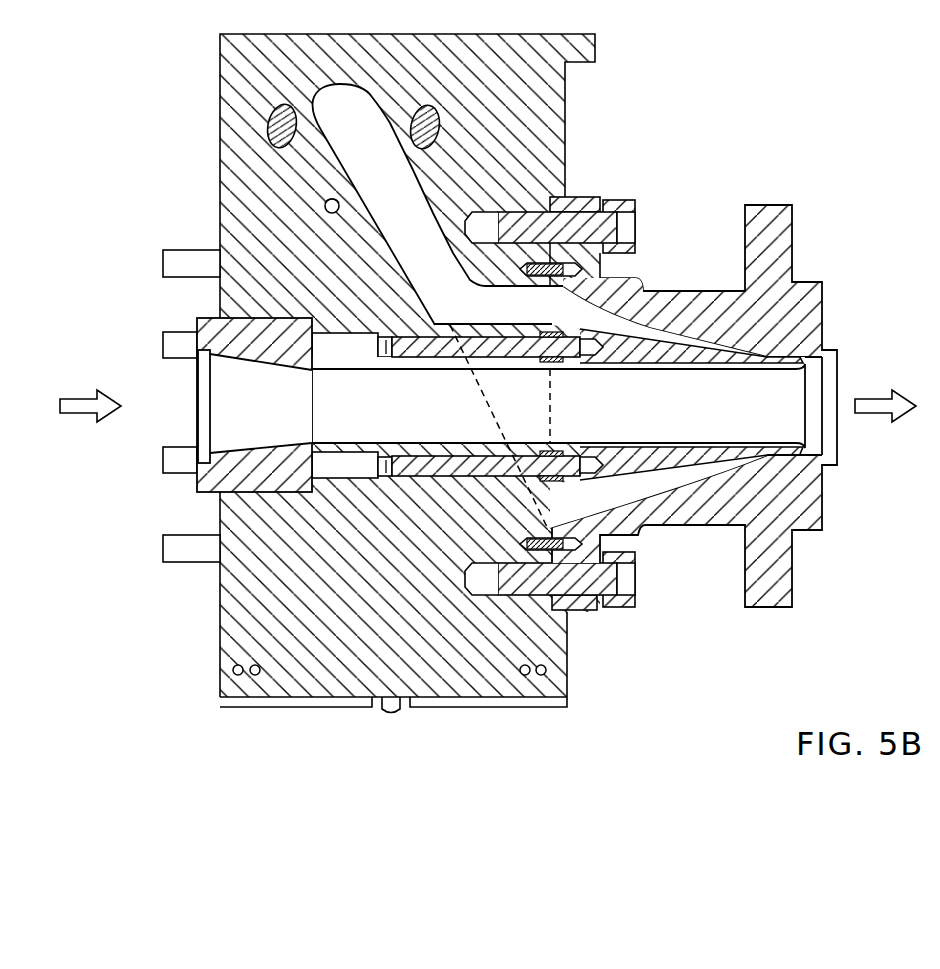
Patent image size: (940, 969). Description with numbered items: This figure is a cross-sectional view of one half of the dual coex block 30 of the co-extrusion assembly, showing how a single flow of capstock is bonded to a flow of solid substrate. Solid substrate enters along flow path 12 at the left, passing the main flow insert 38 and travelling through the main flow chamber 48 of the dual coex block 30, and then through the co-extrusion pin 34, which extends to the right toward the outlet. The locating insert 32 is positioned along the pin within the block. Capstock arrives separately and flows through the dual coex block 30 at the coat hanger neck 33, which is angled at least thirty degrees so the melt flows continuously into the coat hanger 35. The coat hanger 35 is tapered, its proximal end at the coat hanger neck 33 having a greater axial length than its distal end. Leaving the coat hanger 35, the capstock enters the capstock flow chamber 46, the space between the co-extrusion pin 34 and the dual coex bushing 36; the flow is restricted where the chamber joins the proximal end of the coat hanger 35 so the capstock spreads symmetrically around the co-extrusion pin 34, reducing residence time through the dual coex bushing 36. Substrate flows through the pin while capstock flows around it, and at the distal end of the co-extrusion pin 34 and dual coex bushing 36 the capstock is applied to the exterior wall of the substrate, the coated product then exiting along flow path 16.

The flow path 12 is at (90, 422).
The flow path 16 is at (885, 422).
The dual coex block 30 is at (295, 686).
The locating insert 32 is at (557, 362).
The coat hanger neck 33 is at (438, 220).
The co-extrusion pin 34 is at (647, 348).
The coat hanger 35 is at (504, 316).
The dual coex bushing 36 is at (770, 207).
The main flow insert 38 is at (200, 478).
The capstock flow chamber 46 is at (640, 490).
The main flow chamber 48 is at (797, 392).